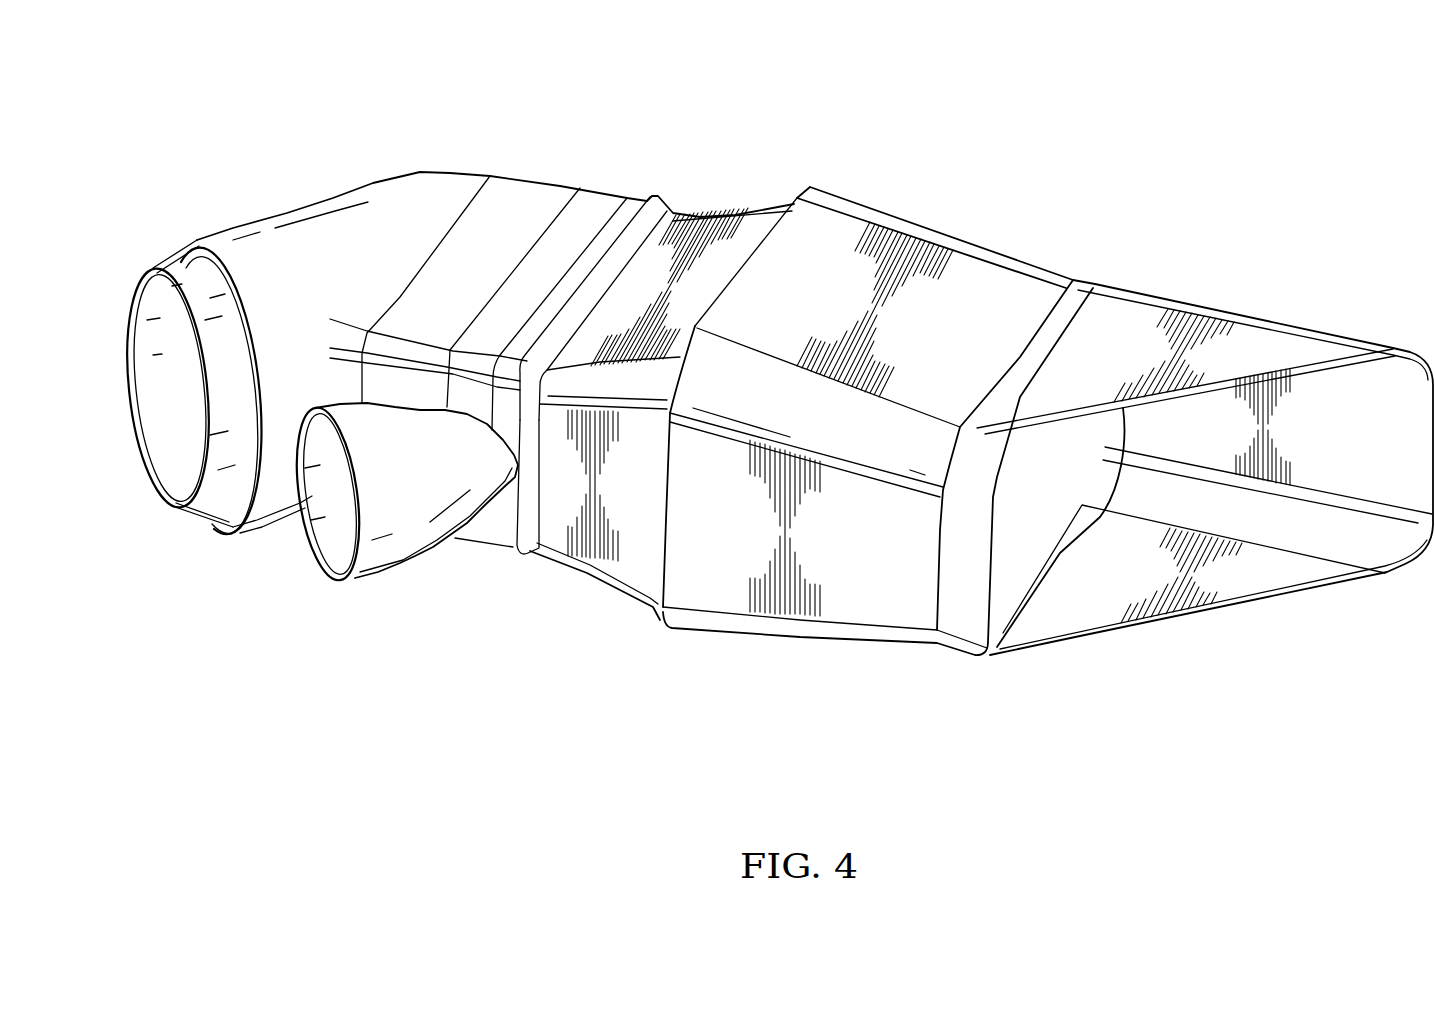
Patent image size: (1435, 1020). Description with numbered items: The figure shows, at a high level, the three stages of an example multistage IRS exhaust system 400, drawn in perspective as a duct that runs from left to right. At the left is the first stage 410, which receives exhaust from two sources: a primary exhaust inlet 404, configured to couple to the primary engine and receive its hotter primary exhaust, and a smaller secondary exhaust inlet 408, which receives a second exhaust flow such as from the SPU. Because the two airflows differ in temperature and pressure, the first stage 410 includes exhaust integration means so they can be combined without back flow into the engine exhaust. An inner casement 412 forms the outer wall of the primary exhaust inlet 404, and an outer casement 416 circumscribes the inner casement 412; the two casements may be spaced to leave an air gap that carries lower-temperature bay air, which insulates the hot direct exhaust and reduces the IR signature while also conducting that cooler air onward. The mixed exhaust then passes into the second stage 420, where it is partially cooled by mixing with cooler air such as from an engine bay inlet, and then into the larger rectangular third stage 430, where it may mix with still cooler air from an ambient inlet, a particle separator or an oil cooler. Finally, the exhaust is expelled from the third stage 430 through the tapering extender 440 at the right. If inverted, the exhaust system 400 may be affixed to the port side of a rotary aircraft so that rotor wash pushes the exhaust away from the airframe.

The multistage IRS exhaust system 400 is at (1050, 112).
The primary exhaust inlet 404 is at (172, 471).
The secondary exhaust inlet 408 is at (330, 547).
The stage 1 410 is at (128, 680).
The S1 inner casement 412 is at (168, 263).
The S1 outer casement 416 is at (417, 172).
The stage 2 420 is at (512, 708).
The stage 3 430 is at (662, 738).
The extender 440 is at (1247, 316).